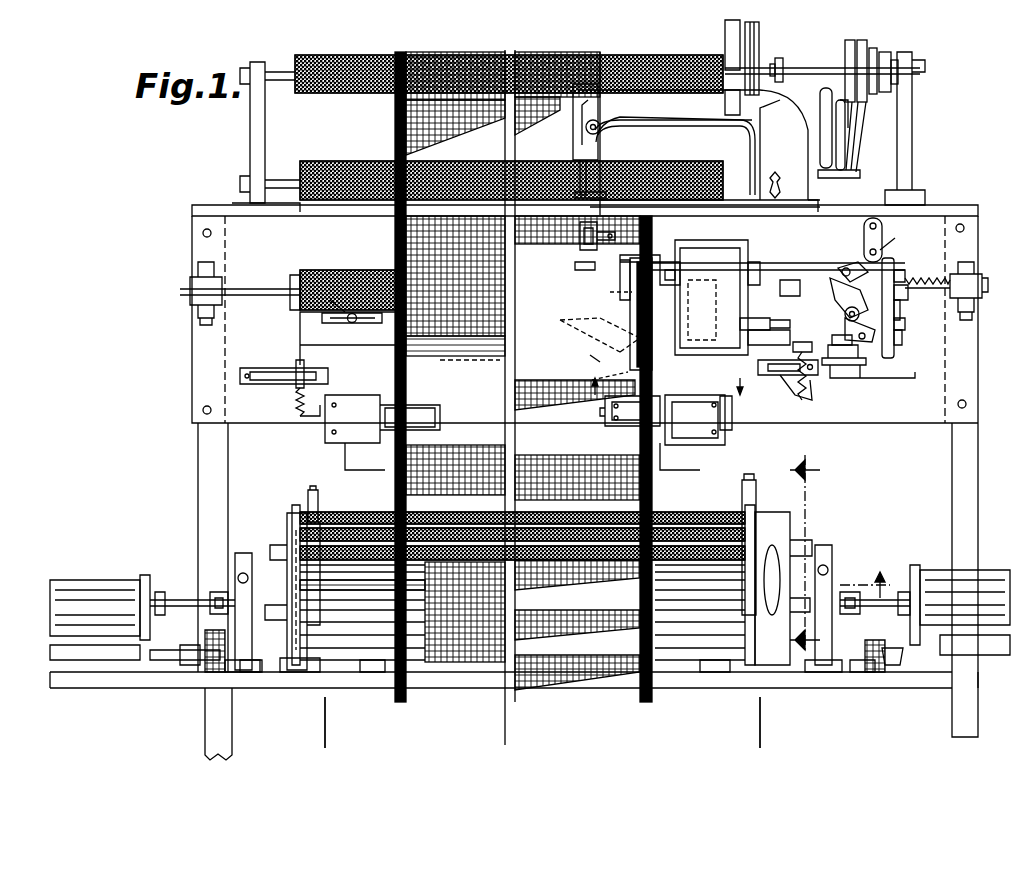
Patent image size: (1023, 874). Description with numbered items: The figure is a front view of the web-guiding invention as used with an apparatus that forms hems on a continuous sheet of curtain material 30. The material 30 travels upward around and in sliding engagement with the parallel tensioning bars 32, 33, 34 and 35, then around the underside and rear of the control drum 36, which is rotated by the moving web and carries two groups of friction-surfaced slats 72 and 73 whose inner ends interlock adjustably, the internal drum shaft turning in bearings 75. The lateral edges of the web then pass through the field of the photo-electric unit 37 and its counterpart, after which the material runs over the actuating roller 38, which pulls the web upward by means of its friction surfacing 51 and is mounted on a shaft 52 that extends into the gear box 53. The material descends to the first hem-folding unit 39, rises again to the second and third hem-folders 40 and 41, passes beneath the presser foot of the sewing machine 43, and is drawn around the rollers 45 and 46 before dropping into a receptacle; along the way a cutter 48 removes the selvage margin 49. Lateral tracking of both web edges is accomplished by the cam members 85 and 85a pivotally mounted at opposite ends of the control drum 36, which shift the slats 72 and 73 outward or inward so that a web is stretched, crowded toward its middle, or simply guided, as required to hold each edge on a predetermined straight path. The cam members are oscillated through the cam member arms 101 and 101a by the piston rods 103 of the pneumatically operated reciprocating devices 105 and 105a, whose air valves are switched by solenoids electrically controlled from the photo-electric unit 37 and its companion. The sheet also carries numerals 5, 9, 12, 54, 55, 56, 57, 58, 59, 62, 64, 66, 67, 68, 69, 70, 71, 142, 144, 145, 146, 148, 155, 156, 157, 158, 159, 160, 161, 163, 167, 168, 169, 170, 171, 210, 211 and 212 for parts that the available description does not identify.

The section line 5 is at (805, 555).
The section line 9 is at (888, 580).
The clamp 12 is at (740, 440).
The material 30 is at (576, 690).
The tensioning bar 32 is at (362, 600).
The tensioning bar 33 is at (398, 600).
The tensioning bar 34 is at (348, 512).
The tensioning bar 35 is at (378, 512).
The control drum 36 is at (712, 509).
The photo-electric unit 37 is at (668, 445).
The actuating roller 38 is at (348, 275).
The first hem-folding unit 39 is at (296, 389).
The second hem-folder 40 is at (580, 230).
The third hem-folder 41 is at (592, 190).
The sewing machine 43 is at (692, 118).
The roller 45 is at (350, 170).
The roller 46 is at (354, 63).
The cutter 48 is at (630, 289).
The selvage margin 49 is at (654, 496).
The friction surfacing 51 is at (300, 272).
The shaft 52 is at (680, 276).
The gear box 53 is at (700, 246).
The link 54 is at (835, 292).
The pivot 55 is at (890, 250).
The adjusting screw bearing 56 is at (925, 283).
The collar 57 is at (904, 296).
The lever end 58 is at (900, 336).
The guide 59 is at (592, 360).
The pivot pin 62 is at (845, 314).
The link pin 64 is at (840, 270).
The bracket 66 is at (866, 236).
The lever 67 is at (900, 312).
The lever bar 68 is at (894, 268).
The link 69 is at (845, 326).
The stop 70 is at (832, 340).
The bracket 71 is at (870, 375).
The slat 72 is at (456, 512).
The slat 73 is at (565, 512).
The bearing 75 is at (243, 552).
The cam member 85 is at (781, 520).
The cam member 85a is at (293, 525).
The cam member arm 101 is at (850, 592).
The cam member arm 101a is at (258, 605).
The piston rod 103 is at (176, 598).
The pneumatically operated reciprocating device 105 is at (935, 572).
The pneumatically operated reciprocating device 105a is at (90, 580).
The guide plate 142 is at (610, 292).
The slide 144 is at (760, 334).
The spring pin 145 is at (795, 348).
The link 146 is at (760, 375).
The shaft 148 is at (765, 284).
The guide 155 is at (485, 364).
The cutter 156 is at (688, 300).
The slide plate 157 is at (388, 320).
The guide 158 is at (608, 376).
The lever 159 is at (332, 298).
The plate 160 is at (340, 325).
The lever 161 is at (845, 165).
The presser 163 is at (580, 263).
The pulley 167 is at (760, 34).
The shaft 168 is at (786, 68).
The pulley 169 is at (852, 42).
The belt 170 is at (855, 130).
The pulley flange 171 is at (884, 50).
The block 210 is at (752, 276).
The slide 211 is at (748, 324).
The block 212 is at (788, 290).